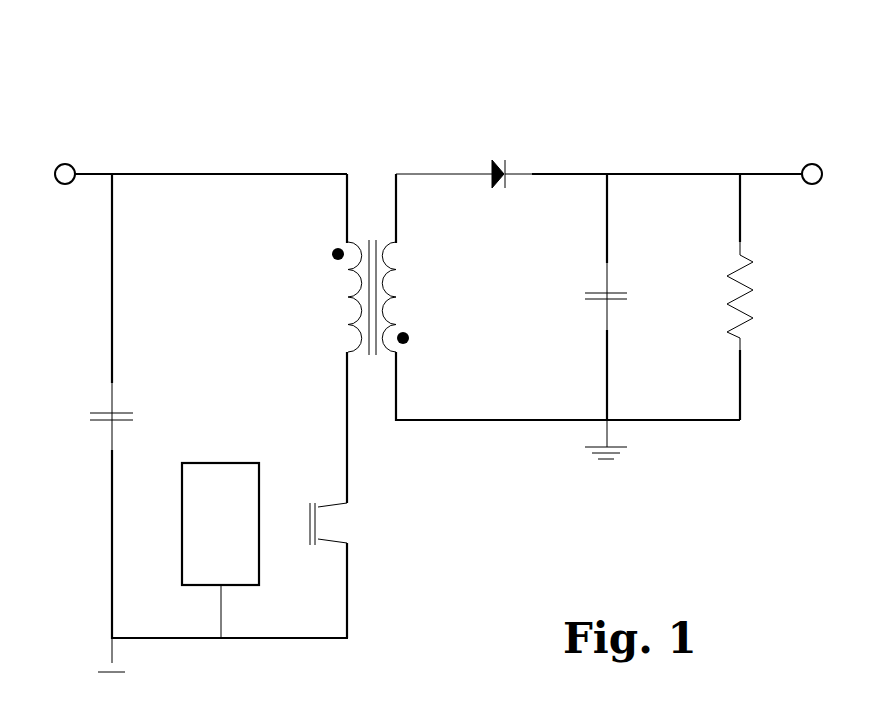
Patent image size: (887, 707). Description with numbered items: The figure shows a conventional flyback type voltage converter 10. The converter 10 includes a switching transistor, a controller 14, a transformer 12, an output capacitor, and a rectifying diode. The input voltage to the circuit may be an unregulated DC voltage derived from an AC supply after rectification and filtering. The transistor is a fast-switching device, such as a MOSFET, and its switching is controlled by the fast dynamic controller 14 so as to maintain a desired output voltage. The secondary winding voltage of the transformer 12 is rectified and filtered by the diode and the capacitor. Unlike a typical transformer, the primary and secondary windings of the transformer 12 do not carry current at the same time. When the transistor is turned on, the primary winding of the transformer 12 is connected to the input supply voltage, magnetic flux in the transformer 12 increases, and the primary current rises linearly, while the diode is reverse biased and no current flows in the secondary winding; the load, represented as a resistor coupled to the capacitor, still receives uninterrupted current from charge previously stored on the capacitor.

The converter 10 is at (713, 112).
The transformer 12 is at (368, 227).
The controller 14 is at (240, 462).